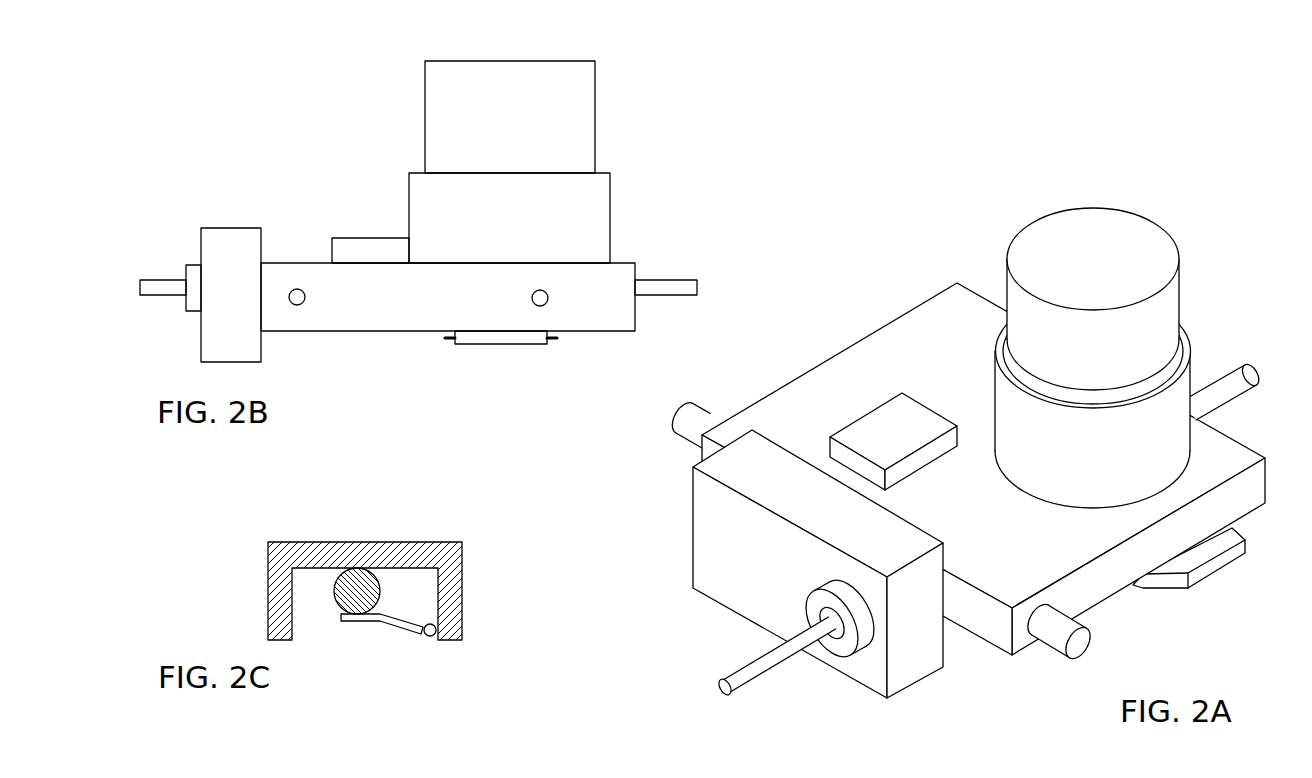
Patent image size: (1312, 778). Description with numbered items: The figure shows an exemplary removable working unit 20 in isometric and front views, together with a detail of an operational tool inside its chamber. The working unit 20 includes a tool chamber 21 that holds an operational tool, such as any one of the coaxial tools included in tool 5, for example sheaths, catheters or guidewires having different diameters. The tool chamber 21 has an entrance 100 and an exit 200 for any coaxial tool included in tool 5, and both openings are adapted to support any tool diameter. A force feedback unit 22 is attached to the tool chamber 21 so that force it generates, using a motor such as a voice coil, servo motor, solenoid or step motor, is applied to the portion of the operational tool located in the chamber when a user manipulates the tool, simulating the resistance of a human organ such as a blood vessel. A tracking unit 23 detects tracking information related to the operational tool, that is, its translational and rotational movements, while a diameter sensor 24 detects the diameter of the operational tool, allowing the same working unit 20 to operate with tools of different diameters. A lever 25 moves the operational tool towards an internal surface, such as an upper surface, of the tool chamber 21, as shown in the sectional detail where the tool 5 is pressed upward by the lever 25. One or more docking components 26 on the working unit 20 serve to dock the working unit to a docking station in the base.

In FIG. 2B, the tool 5 is at (697, 287).
In FIG. 2C, the tool 5 is at (335, 590).
In FIG. 2A, the tool 5 is at (719, 690).
In FIG. 2A, the working unit 20 is at (1108, 150).
In FIG. 2B, the tool chamber 21 is at (298, 332).
In FIG. 2C, the tool chamber 21 is at (462, 563).
In FIG. 2A, the tool chamber 21 is at (961, 283).
In FIG. 2B, the force feedback unit 22 is at (610, 215).
In FIG. 2A, the force feedback unit 22 is at (1180, 292).
In FIG. 2B, the tracking unit 23 is at (361, 238).
In FIG. 2A, the tracking unit 23 is at (878, 405).
In FIG. 2B, the diameter sensor 24 is at (230, 228).
In FIG. 2A, the diameter sensor 24 is at (702, 598).
In FIG. 2B, the lever 25 is at (500, 345).
In FIG. 2C, the lever 25 is at (370, 622).
In FIG. 2A, the lever 25 is at (1172, 596).
In FIG. 2B, the docking component 26 is at (297, 288).
In FIG. 2A, the docking component 26 is at (676, 434).
In FIG. 2B, the entrance 100 is at (660, 190).
In FIG. 2A, the entrance 100 is at (1245, 368).
In FIG. 2B, the exit 200 is at (267, 190).
In FIG. 2A, the exit 200 is at (990, 548).